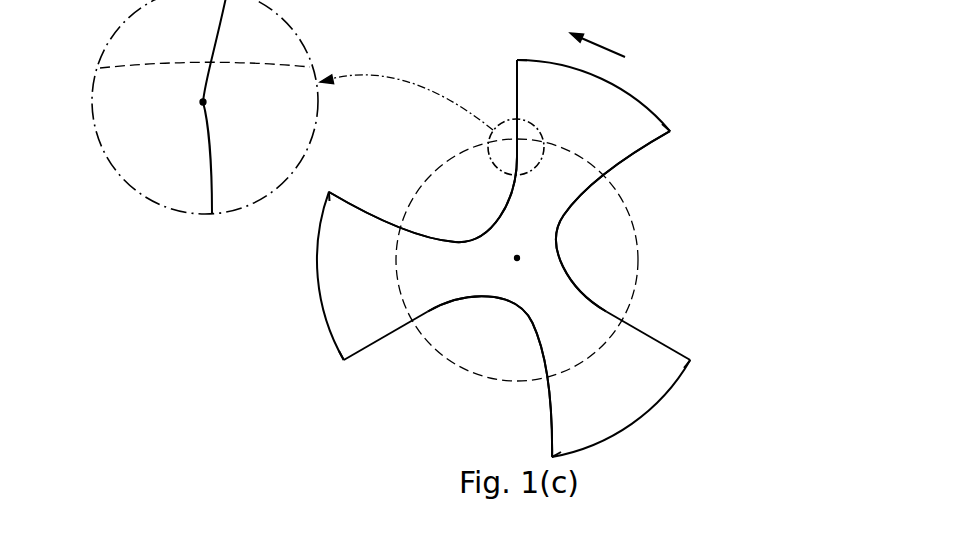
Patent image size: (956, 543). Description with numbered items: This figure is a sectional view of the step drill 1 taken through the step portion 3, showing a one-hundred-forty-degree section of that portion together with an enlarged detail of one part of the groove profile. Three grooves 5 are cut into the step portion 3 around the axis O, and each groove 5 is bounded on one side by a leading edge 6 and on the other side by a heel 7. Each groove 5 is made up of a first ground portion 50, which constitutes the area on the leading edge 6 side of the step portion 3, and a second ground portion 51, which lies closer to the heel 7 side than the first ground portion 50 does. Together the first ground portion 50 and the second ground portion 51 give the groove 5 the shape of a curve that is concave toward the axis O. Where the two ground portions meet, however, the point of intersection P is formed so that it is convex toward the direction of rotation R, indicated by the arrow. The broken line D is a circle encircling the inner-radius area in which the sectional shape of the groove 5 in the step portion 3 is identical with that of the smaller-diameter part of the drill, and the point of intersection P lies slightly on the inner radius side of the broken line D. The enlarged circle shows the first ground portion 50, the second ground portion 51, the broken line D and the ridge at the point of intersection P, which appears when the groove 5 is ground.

The step drill 1 is at (506, 229).
The step portion 3 is at (658, 88).
The groove 5 is at (425, 162).
The leading edge 6 is at (517, 60).
The heel 7 is at (333, 190).
The first ground portion 50 is at (517, 100).
The second ground portion 51 is at (455, 240).
The broken line D is at (642, 253).
The axis O is at (522, 263).
The point of intersection P is at (203, 103).
The direction of rotation R is at (617, 51).